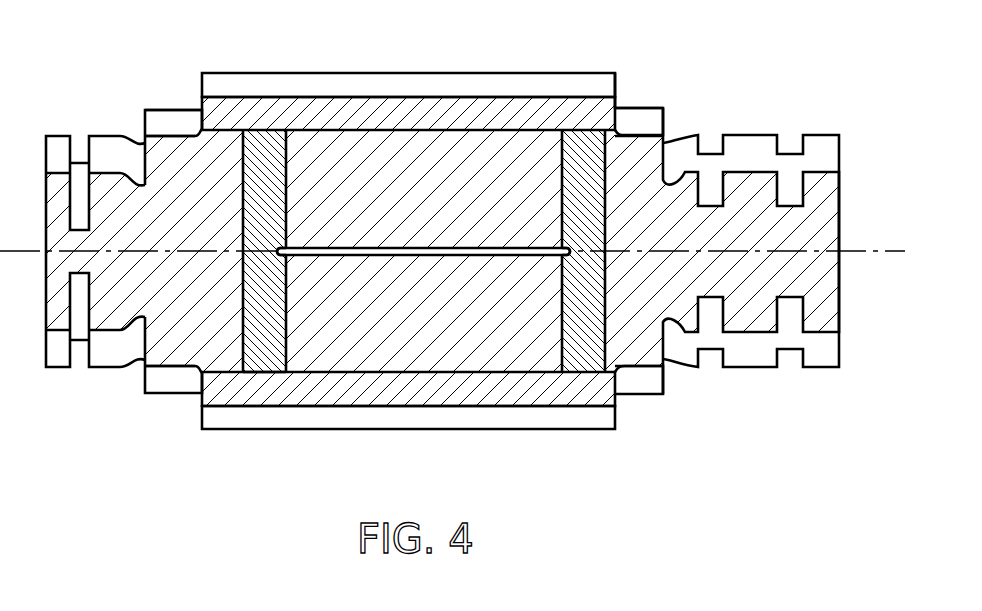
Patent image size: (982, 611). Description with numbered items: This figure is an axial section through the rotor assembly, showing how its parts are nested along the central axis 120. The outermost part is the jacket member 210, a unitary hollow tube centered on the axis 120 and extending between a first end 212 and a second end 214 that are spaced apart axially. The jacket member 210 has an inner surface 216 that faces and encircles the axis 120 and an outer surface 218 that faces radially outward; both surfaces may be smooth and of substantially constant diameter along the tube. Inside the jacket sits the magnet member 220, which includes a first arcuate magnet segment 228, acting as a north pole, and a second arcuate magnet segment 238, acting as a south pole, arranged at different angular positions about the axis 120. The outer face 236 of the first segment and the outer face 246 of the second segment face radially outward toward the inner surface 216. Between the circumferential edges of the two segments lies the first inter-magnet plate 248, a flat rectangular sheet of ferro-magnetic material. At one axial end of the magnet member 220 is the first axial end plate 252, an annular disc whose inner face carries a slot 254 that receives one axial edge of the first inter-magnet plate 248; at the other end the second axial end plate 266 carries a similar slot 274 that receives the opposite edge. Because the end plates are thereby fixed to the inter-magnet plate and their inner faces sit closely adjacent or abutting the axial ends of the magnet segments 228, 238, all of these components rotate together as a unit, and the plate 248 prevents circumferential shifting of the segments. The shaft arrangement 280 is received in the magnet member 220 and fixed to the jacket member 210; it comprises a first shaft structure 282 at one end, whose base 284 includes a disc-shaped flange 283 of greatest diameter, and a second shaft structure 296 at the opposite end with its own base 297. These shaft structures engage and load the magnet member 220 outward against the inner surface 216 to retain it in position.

The axis 120 is at (863, 251).
The jacket member 210 is at (437, 78).
The first end 212 is at (615, 85).
The second end 214 is at (202, 80).
The inner surface 216 is at (343, 130).
The outer surface 218 is at (282, 72).
The magnet member 220 is at (488, 128).
The first arcuate magnet segment 228 is at (447, 201).
The outer face 236 is at (328, 128).
The second arcuate magnet segment 238 is at (447, 328).
The outer face 246 is at (432, 380).
The first inter-magnet plate 248 is at (482, 247).
The first axial end plate 252 is at (585, 372).
The slot 254 is at (563, 253).
The second axial end plate 266 is at (263, 372).
The slot 274 is at (288, 253).
The shaft arrangement 280 is at (857, 142).
The first shaft structure 282 is at (752, 122).
The flange 283 is at (198, 108).
The base 284 is at (647, 352).
The second shaft structure 296 is at (106, 128).
The base 297 is at (173, 353).